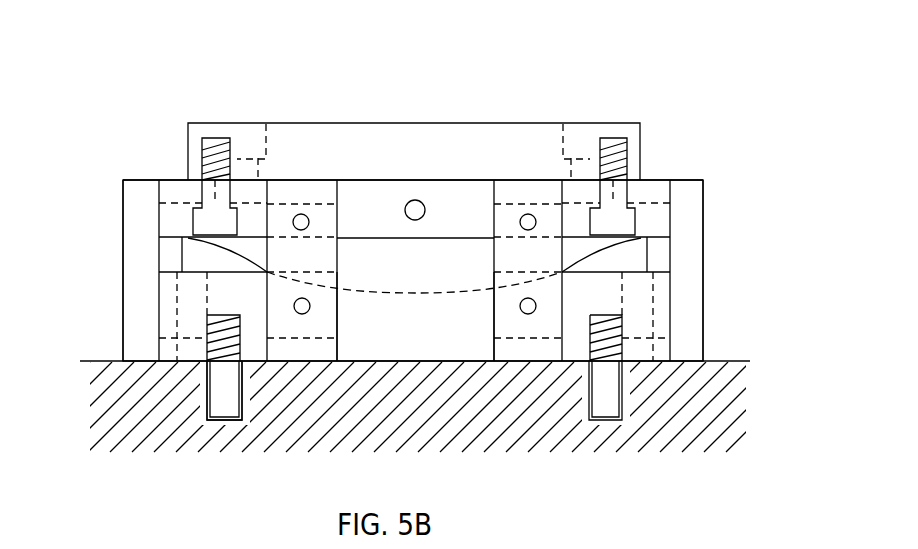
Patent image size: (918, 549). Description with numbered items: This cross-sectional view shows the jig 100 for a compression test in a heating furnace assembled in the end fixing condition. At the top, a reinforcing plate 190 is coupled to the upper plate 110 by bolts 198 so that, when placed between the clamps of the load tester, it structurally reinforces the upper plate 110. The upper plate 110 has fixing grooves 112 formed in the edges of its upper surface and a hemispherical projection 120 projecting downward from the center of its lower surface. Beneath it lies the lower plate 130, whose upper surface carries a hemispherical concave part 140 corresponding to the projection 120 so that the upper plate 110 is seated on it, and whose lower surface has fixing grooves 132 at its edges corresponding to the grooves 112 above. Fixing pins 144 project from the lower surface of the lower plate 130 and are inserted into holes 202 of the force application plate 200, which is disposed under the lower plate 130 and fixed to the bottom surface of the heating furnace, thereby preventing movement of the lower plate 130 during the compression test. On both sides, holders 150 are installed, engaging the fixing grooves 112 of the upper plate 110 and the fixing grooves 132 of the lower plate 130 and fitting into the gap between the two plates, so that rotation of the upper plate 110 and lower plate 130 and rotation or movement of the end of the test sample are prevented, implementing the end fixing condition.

The jig for a compression test in a heating furnace 100 is at (693, 111).
The upper plate 110 is at (667, 220).
The fixing grooves 112 is at (312, 192).
The hemispherical projection 120 is at (603, 252).
The lower plate 130 is at (667, 312).
The fixing grooves 132 is at (398, 388).
The hemispherical concave part 140 is at (458, 293).
The fixing pins 144 is at (235, 397).
The holders 150 is at (137, 265).
The plate 190 is at (423, 138).
The bolts 198 is at (212, 137).
The force application plate 200 is at (103, 361).
The holes 202 is at (216, 398).